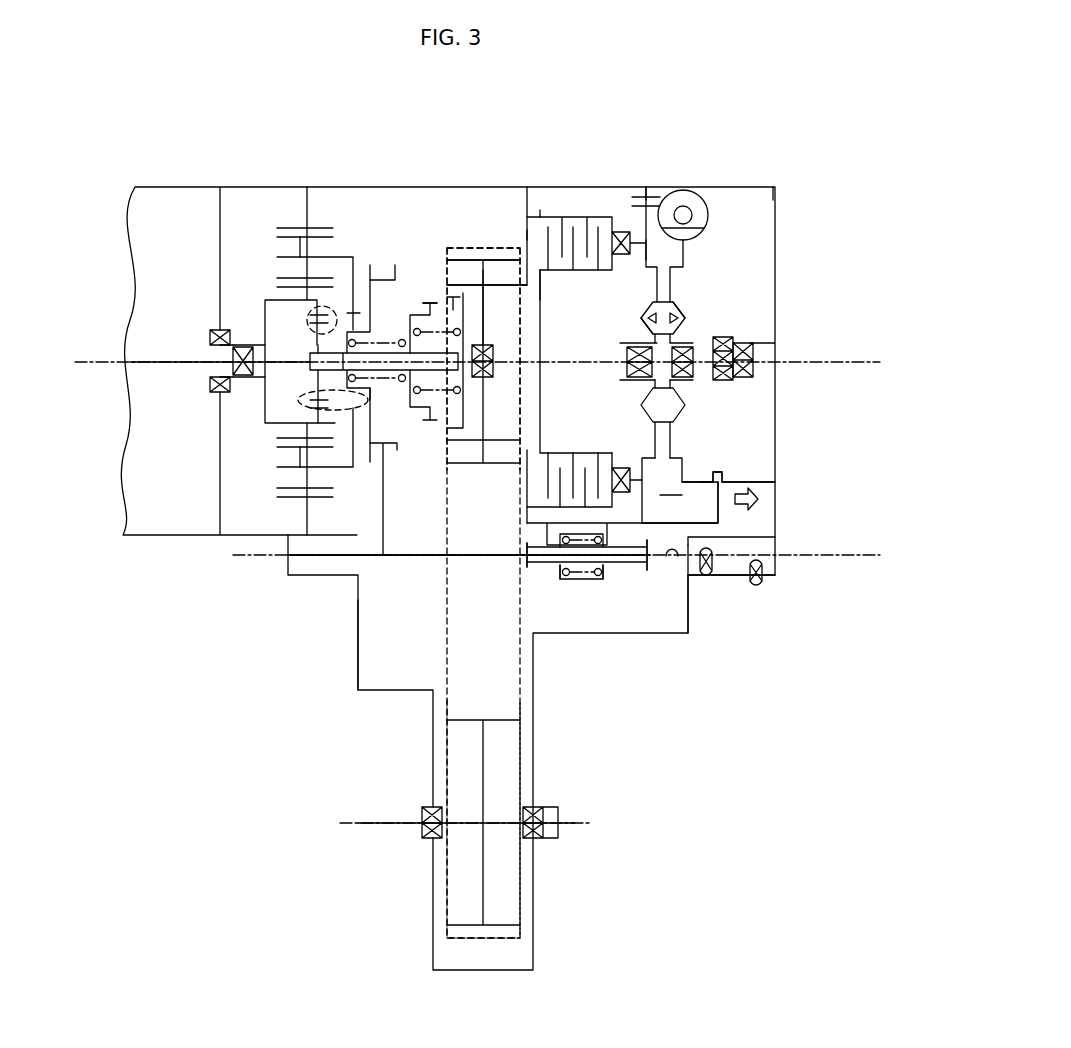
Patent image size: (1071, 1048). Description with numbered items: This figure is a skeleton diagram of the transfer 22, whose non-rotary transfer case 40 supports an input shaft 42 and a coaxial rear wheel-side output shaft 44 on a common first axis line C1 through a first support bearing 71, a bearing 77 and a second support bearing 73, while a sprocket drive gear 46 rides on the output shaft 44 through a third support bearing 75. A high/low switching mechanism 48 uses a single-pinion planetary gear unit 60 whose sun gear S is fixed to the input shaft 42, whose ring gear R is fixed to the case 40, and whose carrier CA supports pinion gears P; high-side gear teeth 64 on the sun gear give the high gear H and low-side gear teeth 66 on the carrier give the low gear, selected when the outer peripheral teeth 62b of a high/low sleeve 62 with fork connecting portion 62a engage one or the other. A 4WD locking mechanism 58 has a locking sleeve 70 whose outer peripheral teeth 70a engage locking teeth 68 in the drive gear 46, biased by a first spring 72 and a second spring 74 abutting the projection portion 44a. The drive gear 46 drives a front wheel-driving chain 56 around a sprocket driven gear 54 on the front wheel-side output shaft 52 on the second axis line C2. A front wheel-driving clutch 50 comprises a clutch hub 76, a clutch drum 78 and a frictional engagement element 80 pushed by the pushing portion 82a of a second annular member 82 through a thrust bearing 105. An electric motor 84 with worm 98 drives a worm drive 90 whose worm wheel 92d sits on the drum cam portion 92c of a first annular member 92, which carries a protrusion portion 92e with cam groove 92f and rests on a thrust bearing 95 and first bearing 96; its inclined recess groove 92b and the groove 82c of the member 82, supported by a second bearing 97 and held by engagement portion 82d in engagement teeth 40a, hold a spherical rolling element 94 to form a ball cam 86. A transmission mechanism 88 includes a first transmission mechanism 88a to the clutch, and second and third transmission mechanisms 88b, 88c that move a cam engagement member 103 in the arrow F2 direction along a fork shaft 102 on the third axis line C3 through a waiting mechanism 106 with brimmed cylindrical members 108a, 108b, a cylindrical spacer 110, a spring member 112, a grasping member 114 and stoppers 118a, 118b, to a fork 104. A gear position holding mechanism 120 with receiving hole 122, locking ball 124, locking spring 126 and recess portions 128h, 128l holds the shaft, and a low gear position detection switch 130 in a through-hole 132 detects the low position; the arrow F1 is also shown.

The transfer 22 is at (760, 148).
The transfer case 40 is at (233, 186).
The engagement teeth 40a is at (614, 217).
The input shaft 42 is at (170, 357).
The rear wheel-side output shaft 44 is at (795, 360).
The projection portion 44a is at (470, 300).
The sprocket drive gear 46 is at (463, 258).
The high/low switching mechanism 48 is at (374, 204).
The front wheel-driving clutch 50 is at (556, 201).
The front wheel-side output shaft 52 is at (383, 822).
The sprocket driven gear 54 is at (473, 722).
The front wheel-driving chain 56 is at (440, 890).
The 4WD locking mechanism 58 is at (424, 242).
The single-pinion planetary gear unit 60 is at (318, 175).
The high/low sleeve 62 is at (365, 280).
The fork connecting portion 62a is at (386, 275).
The outer peripheral teeth 62b is at (322, 330).
The high-side gear teeth 64 is at (315, 313).
The low-side gear teeth 66 is at (358, 415).
The locking teeth 68 is at (450, 297).
The locking sleeve 70 is at (418, 330).
The outer peripheral teeth 70a is at (425, 303).
The first support bearing 71 is at (205, 335).
The first spring 72 is at (400, 383).
The second support bearing 73 is at (752, 343).
The second spring 74 is at (457, 395).
The third support bearing 75 is at (493, 378).
The clutch hub 76 is at (580, 272).
The bearing 77 is at (243, 390).
The clutch drum 78 is at (560, 225).
The frictional engagement element 80 is at (537, 241).
The second annular member 82 is at (644, 305).
The pushing portion 82a is at (625, 262).
The inclined recess groove 82c is at (645, 322).
The engagement portion 82d is at (648, 187).
The electric motor 84 is at (657, 186).
The ball cam 86 is at (656, 506).
The transmission mechanism 88 is at (672, 617).
The first transmission mechanism 88a is at (620, 214).
The second transmission mechanism 88b is at (490, 609).
The third transmission mechanism 88c is at (436, 617).
The worm drive 90 is at (706, 220).
The first annular member 92 is at (682, 308).
The inclined recess groove 92b is at (688, 320).
The drum cam portion 92c is at (746, 455).
The worm wheel 92d is at (680, 490).
The protrusion portion 92e is at (700, 482).
The cam groove 92f is at (718, 474).
The spherical rolling element 94 is at (652, 410).
The thrust bearing 95 is at (728, 382).
The first bearing 96 is at (677, 380).
The second bearing 97 is at (633, 379).
The worm 98 is at (690, 207).
The fork shaft 102 is at (412, 558).
The cam engagement member 103 is at (718, 492).
The fork 104 is at (387, 488).
The thrust bearing 105 is at (632, 243).
The waiting mechanism 106 is at (580, 580).
The brimmed cylindrical member 108a is at (552, 566).
The brimmed cylindrical member 108b is at (620, 568).
The cylindrical spacer 110 is at (575, 560).
The spring member 112 is at (596, 580).
The grasping member 114 is at (560, 518).
The stopper 118a is at (520, 562).
The stopper 118b is at (642, 572).
The gear position holding mechanism 120 is at (722, 630).
The receiving hole 122 is at (708, 577).
The locking ball 124 is at (697, 560).
The locking spring 126 is at (704, 578).
The recess portion 128h is at (705, 550).
The recess portion 128l is at (680, 502).
The low gear position detection switch 130 is at (762, 596).
The through-hole 132 is at (759, 584).
The ring gear R is at (293, 228).
The pinion gears P is at (282, 238).
The sun gear S is at (279, 283).
The carrier CA is at (355, 257).
The high gear H is at (333, 339).
The first axis line C1 is at (854, 372).
The second axis line C2 is at (343, 830).
The third axis line C3 is at (265, 558).
The force direction F1 is at (603, 368).
The arrow F2 direction F2 is at (759, 499).